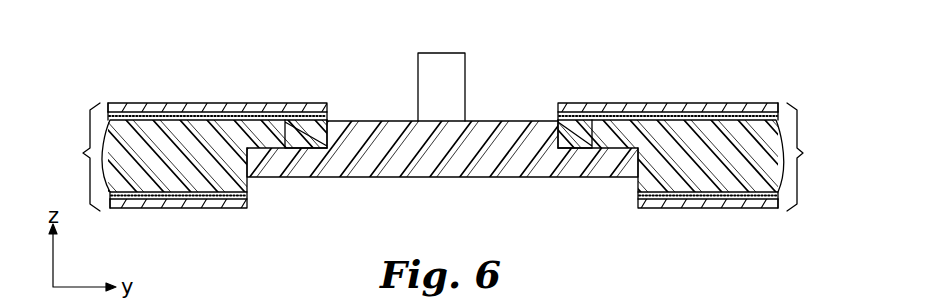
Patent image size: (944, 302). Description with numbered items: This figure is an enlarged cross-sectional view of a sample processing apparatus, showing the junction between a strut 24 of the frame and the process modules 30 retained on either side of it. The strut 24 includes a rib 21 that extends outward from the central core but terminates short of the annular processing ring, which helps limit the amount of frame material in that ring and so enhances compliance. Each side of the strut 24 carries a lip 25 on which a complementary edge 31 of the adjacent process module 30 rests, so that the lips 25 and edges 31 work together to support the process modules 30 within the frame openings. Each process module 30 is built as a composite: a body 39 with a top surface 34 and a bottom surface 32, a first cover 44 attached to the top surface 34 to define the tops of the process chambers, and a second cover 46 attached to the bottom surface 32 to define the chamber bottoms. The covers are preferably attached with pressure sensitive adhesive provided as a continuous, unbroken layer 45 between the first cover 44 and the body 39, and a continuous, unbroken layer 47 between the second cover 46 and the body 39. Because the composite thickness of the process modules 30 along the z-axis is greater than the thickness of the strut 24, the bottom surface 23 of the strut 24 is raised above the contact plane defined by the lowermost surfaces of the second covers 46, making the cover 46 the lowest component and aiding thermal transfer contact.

The rib 21 is at (442, 62).
The bottom surface of the strut 23 is at (447, 178).
The strut 24 is at (497, 120).
The lip 25 is at (293, 120).
The process module 30 is at (441, 157).
The edge of the process module 31 is at (312, 150).
The bottom surface of the process module 32 is at (188, 200).
The top surface of the process module 34 is at (228, 120).
The body 39 is at (147, 122).
The first cover 44 is at (125, 108).
The layer of pressure sensitive adhesive 45 is at (187, 110).
The second cover 46 is at (230, 203).
The layer of pressure sensitive adhesive 47 is at (137, 203).